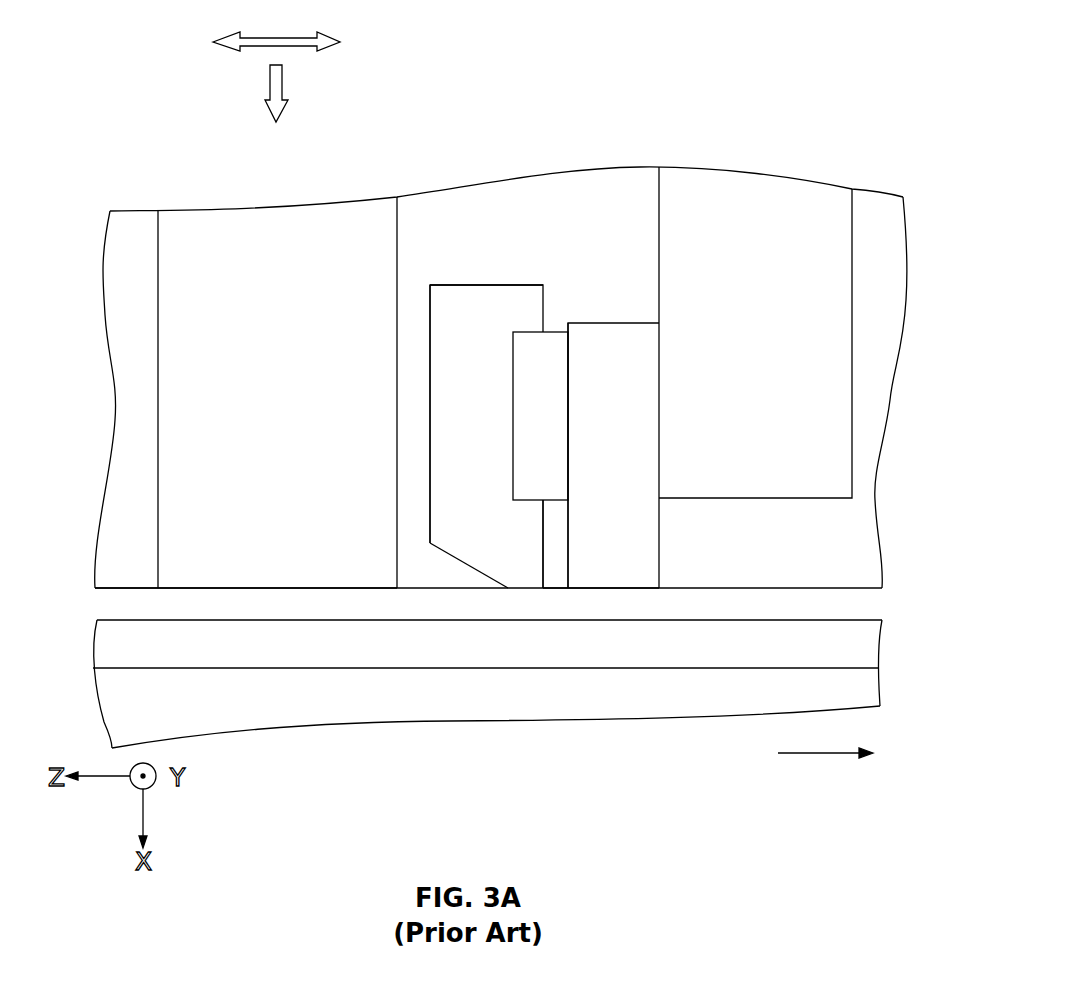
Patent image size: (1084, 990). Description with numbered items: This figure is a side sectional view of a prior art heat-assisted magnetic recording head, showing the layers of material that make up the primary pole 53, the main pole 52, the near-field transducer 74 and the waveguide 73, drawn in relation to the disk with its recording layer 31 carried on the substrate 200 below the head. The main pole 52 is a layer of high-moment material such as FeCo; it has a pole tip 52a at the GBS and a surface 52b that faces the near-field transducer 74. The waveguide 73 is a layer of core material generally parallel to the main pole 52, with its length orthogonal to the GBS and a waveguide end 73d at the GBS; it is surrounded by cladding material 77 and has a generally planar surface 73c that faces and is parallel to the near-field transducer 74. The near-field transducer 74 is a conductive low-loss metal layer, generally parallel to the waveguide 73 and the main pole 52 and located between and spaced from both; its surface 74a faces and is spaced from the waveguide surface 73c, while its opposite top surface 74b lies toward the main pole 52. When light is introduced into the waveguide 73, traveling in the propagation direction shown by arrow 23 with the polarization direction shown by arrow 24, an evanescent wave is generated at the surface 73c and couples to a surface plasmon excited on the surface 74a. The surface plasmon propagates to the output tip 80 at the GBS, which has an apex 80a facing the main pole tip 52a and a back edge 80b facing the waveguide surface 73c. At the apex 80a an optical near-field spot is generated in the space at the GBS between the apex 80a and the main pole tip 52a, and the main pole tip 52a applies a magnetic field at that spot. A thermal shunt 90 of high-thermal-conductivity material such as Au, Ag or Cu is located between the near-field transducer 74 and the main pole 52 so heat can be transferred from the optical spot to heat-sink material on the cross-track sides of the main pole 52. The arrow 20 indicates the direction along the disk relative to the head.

The slider motion direction 20 is at (810, 755).
The arrow 23 is at (268, 95).
The arrow 24 is at (312, 35).
The recording layer 31 is at (865, 652).
The main pole 52 is at (643, 552).
The pole tip 52a is at (643, 590).
The surface 52b is at (570, 467).
The primary pole 53 is at (833, 248).
The waveguide 73 is at (197, 222).
The generally planar surface 73c is at (398, 450).
The waveguide end 73d is at (195, 590).
The near-field transducer (NFT) 74 is at (520, 317).
The surface 74a is at (428, 340).
The sensor top 74b is at (438, 285).
The cladding material 77 is at (128, 308).
The output tip 80 is at (458, 557).
The apex 80a is at (542, 588).
The back edge 80b is at (428, 517).
The thermal shunt 90 is at (562, 410).
The substrate 200 is at (867, 687).
The gas-bearing surface GBS is at (873, 590).